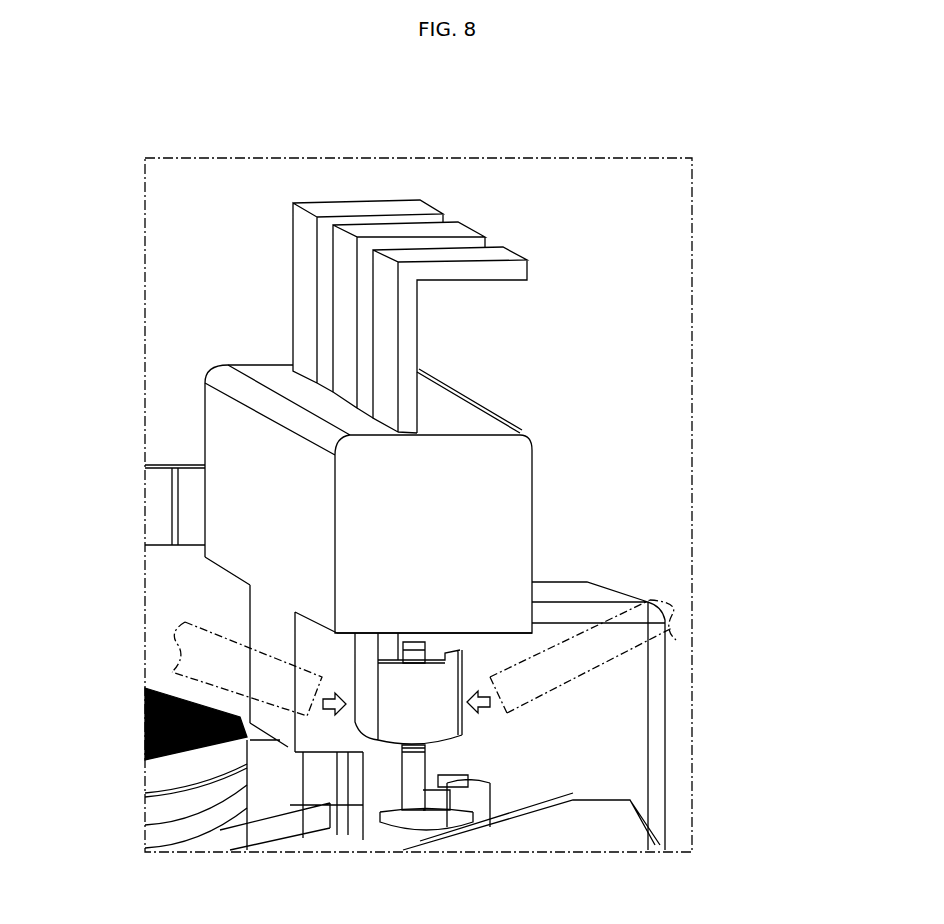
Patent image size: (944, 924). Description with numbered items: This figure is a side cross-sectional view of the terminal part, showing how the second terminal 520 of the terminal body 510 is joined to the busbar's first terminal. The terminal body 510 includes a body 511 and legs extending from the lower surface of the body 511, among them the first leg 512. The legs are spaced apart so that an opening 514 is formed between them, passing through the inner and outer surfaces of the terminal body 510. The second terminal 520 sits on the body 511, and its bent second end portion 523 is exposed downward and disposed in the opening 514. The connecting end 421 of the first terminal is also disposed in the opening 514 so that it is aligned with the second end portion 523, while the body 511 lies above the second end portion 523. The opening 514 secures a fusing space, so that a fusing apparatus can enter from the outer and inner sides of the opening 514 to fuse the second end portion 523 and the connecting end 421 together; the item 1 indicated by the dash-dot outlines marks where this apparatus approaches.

The workpiece 1 is at (570, 645).
The connecting end 421 is at (413, 777).
The terminal body 510 is at (444, 607).
The body 511 is at (235, 445).
The first leg 512 is at (625, 683).
The opening 514 is at (500, 652).
The second terminal 520 is at (460, 257).
The second end portion 523 is at (413, 733).